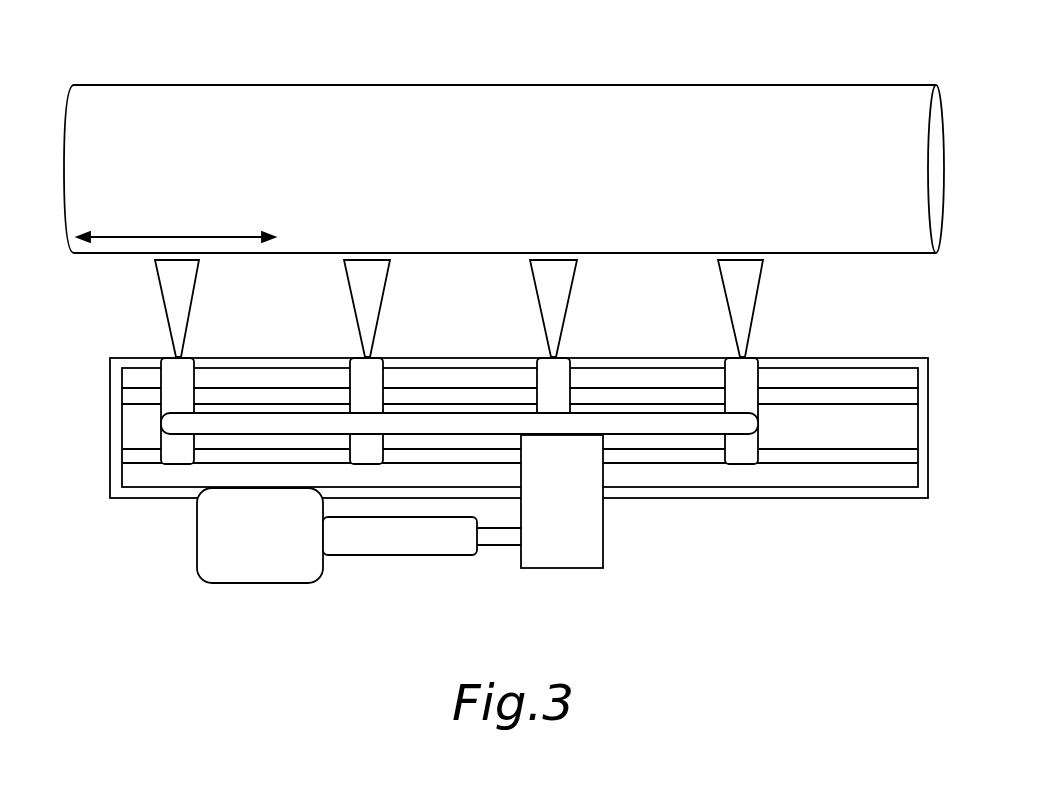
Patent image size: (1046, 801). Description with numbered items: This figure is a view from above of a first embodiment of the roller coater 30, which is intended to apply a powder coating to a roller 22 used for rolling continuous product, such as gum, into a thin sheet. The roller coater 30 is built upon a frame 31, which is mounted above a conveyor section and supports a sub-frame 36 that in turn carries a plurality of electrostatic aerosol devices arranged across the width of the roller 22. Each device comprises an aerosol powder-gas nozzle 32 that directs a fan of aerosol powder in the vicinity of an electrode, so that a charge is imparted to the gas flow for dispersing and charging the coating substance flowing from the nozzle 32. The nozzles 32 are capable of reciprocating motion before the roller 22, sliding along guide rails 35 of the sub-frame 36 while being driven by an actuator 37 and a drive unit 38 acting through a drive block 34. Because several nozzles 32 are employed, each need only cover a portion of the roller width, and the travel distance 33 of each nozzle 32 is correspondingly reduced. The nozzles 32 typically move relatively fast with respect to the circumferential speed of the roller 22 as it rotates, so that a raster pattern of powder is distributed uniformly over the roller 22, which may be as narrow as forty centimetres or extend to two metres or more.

The roller 22 is at (350, 100).
The roller coater 30 is at (497, 466).
The frame 31 is at (153, 380).
The aerosol powder-gas nozzle 32 is at (188, 298).
The travel distance 33 is at (99, 243).
The drive block 34 is at (587, 570).
The guide rails 35 is at (863, 452).
The sub-frame 36 is at (785, 490).
The actuator 37 is at (421, 545).
The drive unit 38 is at (262, 573).